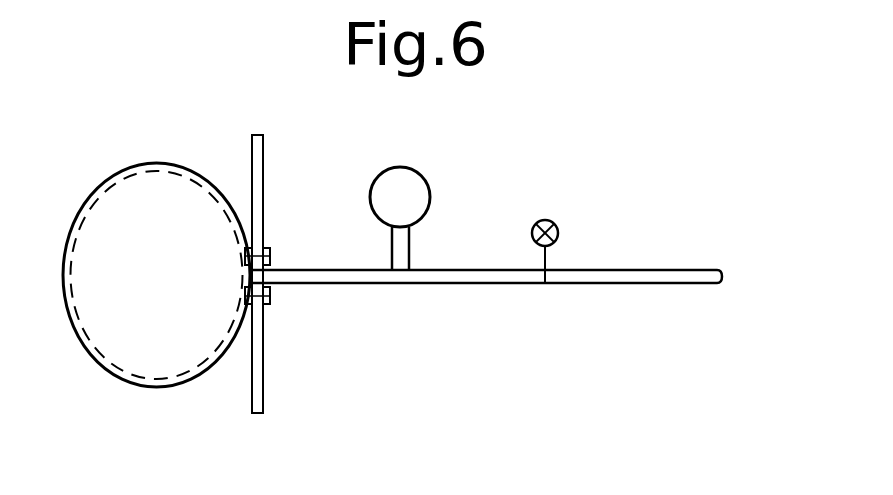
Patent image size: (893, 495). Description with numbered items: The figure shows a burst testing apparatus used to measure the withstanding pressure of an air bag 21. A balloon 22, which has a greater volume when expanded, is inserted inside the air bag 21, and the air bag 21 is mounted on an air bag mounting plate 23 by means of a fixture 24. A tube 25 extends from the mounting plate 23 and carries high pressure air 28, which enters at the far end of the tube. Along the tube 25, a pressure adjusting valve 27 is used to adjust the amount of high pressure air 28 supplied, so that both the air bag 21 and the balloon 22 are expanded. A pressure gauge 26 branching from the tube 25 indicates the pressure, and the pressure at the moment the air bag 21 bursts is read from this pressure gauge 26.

The air bag 21 is at (196, 381).
The balloon 22 is at (108, 366).
The air bag mounting plate 23 is at (263, 393).
The fixture 24 is at (270, 296).
The tube 25 is at (522, 283).
The pressure gauge 26 is at (430, 190).
The pressure adjusting valve 27 is at (557, 224).
The high pressure air 28 is at (730, 275).